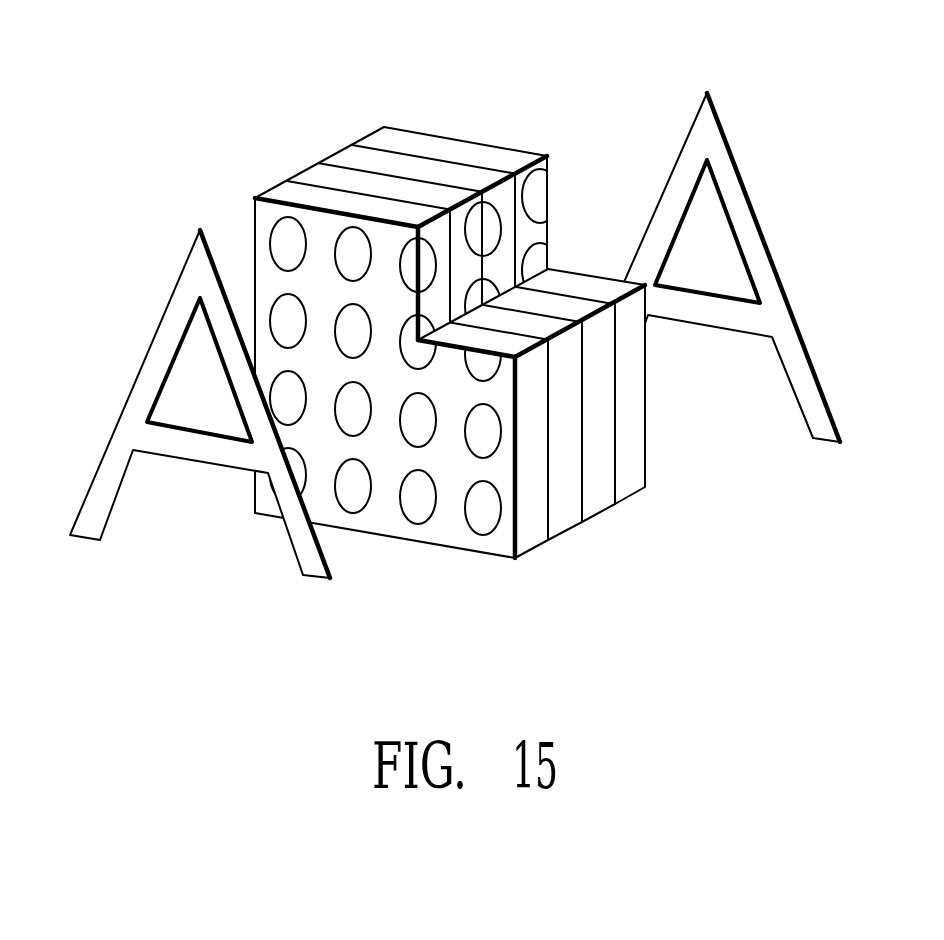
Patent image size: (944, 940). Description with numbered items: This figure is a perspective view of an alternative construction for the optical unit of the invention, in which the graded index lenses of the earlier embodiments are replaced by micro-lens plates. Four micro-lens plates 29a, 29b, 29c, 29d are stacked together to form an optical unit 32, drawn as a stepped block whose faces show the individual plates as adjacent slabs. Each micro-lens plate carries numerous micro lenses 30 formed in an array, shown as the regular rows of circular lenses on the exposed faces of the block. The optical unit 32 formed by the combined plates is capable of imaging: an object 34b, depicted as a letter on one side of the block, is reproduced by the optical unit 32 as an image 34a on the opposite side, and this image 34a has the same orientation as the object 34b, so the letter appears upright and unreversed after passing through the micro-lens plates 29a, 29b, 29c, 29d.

The micro-lens plate 29a is at (528, 543).
The micro-lens plate 29b is at (566, 521).
The micro-lens plate 29c is at (602, 501).
The micro-lens plate 29d is at (632, 490).
The micro lenses 30 is at (347, 240).
The optical unit 32 is at (509, 351).
The image 34a is at (748, 197).
The object 34b is at (167, 302).